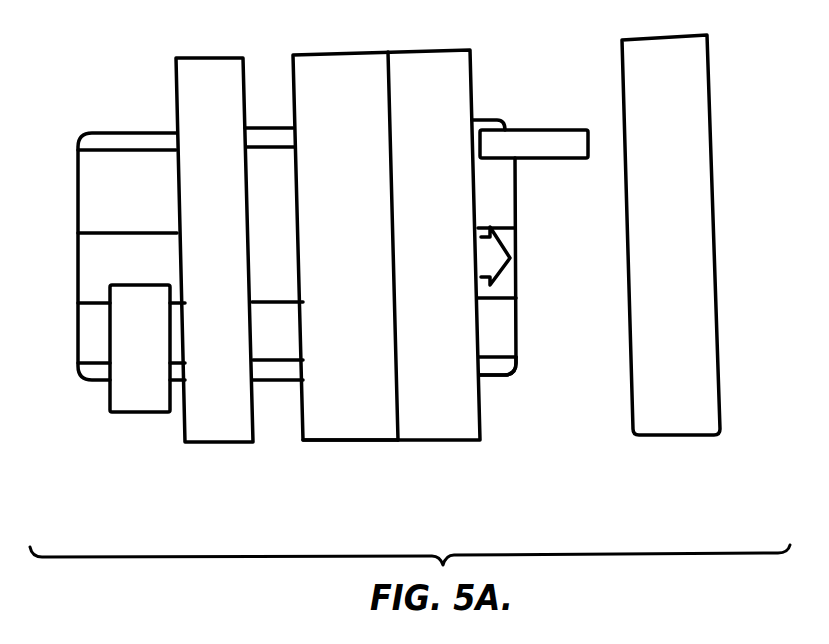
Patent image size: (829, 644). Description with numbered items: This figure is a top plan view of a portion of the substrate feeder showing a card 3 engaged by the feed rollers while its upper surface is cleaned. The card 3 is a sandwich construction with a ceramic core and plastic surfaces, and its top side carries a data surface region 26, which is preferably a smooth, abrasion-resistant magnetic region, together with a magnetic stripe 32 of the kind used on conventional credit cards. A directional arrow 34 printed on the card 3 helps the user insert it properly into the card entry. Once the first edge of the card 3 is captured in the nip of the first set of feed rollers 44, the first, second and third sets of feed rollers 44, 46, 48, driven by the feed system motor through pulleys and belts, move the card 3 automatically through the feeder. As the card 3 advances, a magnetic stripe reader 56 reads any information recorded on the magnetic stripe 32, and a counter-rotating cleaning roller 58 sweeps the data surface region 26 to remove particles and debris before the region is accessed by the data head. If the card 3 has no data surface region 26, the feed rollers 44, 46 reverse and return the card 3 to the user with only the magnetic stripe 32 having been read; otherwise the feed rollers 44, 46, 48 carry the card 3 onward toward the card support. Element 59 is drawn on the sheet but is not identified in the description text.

The card 3 is at (78, 218).
The data surface region 26 is at (152, 205).
The magnetic stripe 32 is at (499, 358).
The directional arrow 34 is at (515, 228).
The first set of feed rollers 44 is at (202, 70).
The second set of feed rollers 46 is at (422, 62).
The third set of feed rollers 48 is at (680, 425).
The magnetic stripe reader 56 is at (153, 414).
The counter-rotating cleaning roller 58 is at (357, 442).
The tab 59 is at (530, 129).